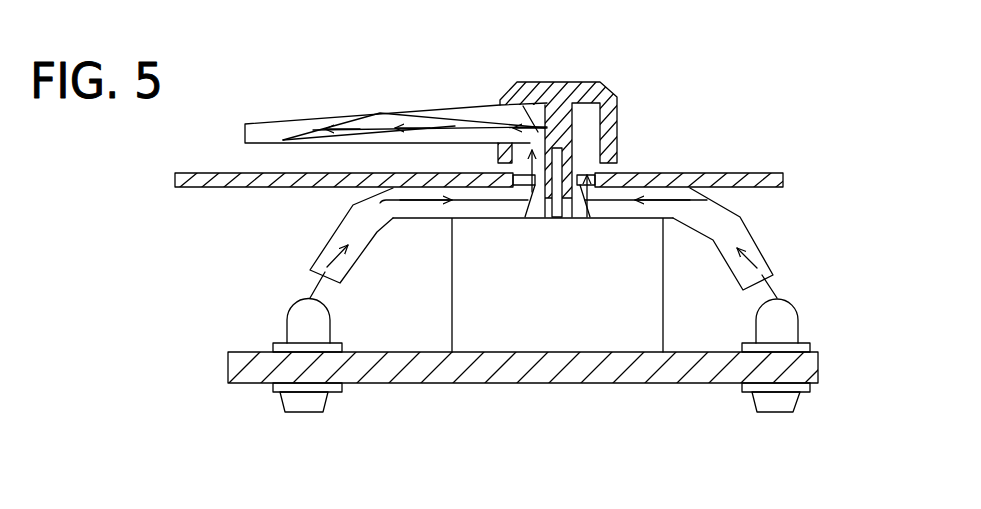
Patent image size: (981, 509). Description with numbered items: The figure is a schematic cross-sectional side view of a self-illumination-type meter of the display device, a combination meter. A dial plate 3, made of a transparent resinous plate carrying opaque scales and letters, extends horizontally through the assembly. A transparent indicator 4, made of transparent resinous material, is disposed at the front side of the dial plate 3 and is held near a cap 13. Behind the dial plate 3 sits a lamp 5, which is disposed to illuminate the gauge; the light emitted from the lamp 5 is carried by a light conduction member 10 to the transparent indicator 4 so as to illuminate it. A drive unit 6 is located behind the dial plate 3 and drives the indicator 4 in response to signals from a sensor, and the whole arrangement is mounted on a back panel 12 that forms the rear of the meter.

The dial plate 3 is at (737, 182).
The transparent indicator 4 is at (333, 110).
The lamp 5 is at (787, 328).
The drive unit 6 is at (543, 332).
The light conduction member 10 is at (762, 253).
The back panel 12 is at (702, 367).
The cap 13 is at (548, 95).